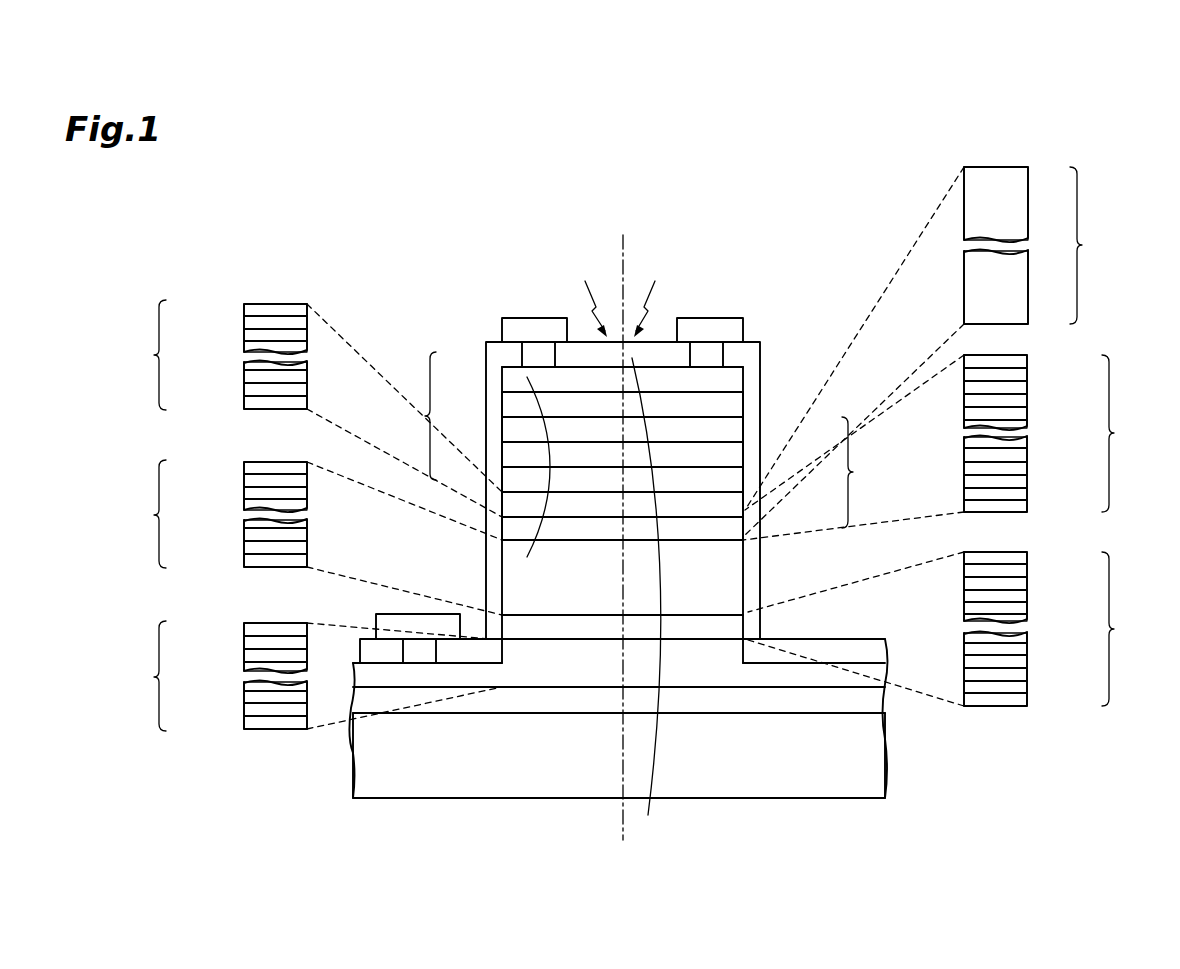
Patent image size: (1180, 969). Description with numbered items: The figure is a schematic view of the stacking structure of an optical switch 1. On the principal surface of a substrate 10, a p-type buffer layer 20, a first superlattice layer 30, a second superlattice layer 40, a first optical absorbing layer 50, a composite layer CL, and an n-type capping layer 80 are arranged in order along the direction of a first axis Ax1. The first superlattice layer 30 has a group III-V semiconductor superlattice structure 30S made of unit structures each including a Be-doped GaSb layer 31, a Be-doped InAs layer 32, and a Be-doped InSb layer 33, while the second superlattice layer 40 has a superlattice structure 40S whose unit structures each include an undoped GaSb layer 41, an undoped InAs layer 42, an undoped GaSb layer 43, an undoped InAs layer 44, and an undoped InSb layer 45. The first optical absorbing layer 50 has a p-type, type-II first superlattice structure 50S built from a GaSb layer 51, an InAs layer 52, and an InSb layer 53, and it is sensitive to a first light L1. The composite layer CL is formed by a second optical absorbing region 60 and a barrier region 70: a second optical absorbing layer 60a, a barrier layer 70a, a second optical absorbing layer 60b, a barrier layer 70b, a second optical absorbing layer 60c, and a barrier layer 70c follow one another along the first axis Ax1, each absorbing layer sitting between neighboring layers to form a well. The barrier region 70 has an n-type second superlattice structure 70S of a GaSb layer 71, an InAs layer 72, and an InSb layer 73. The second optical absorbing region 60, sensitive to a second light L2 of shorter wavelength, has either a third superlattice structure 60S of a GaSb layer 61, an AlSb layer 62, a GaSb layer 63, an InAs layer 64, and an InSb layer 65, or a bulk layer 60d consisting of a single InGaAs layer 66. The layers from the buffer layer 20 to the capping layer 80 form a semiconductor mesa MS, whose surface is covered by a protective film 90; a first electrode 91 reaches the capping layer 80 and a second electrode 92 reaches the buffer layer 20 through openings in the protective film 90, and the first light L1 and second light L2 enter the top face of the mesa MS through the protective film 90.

The optical switch 1 is at (675, 210).
The substrate 10 is at (877, 774).
The p-type buffer layer 20 is at (883, 702).
The first superlattice layer 30 is at (883, 676).
The group III-V semiconductor superlattice structure 30S is at (303, 676).
The Be-doped GaSb layer 31 is at (244, 655).
The Be-doped InAs layer 32 is at (244, 642).
The Be-doped InSb layer 33 is at (244, 629).
The second superlattice layer 40 is at (737, 625).
The group III-V semiconductor superlattice structure 40S is at (953, 629).
The undoped GaSb layer 41 is at (1027, 609).
The undoped InAs layer 42 is at (1027, 597).
The undoped GaSb layer 43 is at (1027, 584).
The undoped InAs layer 44 is at (1027, 571).
The undoped InSb layer 45 is at (1027, 558).
The first optical absorbing layer 50 is at (737, 578).
The first superlattice structure 50S is at (306, 537).
The GaSb layer 51 is at (244, 493).
The InAs layer 52 is at (244, 481).
The InSb layer 53 is at (244, 468).
The second optical absorbing region 60 is at (863, 472).
The second optical absorbing layer 60a is at (737, 528).
The second optical absorbing layer 60b is at (737, 478).
The second optical absorbing layer 60c is at (737, 430).
The third superlattice structure 60S is at (950, 447).
The bulk layer 60d is at (934, 352).
The GaSb layer 61 is at (1027, 414).
The AlSb layer 62 is at (1027, 401).
The GaSb layer 63 is at (1027, 388).
The InAs layer 64 is at (1027, 374).
The InSb layer 65 is at (1027, 361).
The InGaAs layer 66 is at (1028, 200).
The barrier region 70 is at (569, 434).
The barrier layer 70a is at (512, 505).
The barrier layer 70b is at (512, 455).
The barrier layer 70c is at (512, 407).
The second superlattice structure 70S is at (306, 408).
The GaSb layer 71 is at (244, 335).
The InAs layer 72 is at (244, 322).
The InSb layer 73 is at (244, 310).
The n-type capping layer 80 is at (737, 382).
The protective film 90 is at (496, 344).
The first electrode 91 is at (539, 324).
The second electrode 92 is at (420, 615).
The first axis Ax1 is at (623, 244).
The first light L1 is at (592, 297).
The second light L2 is at (650, 297).
The composite layer CL is at (552, 452).
The semiconductor mesa MS is at (662, 565).